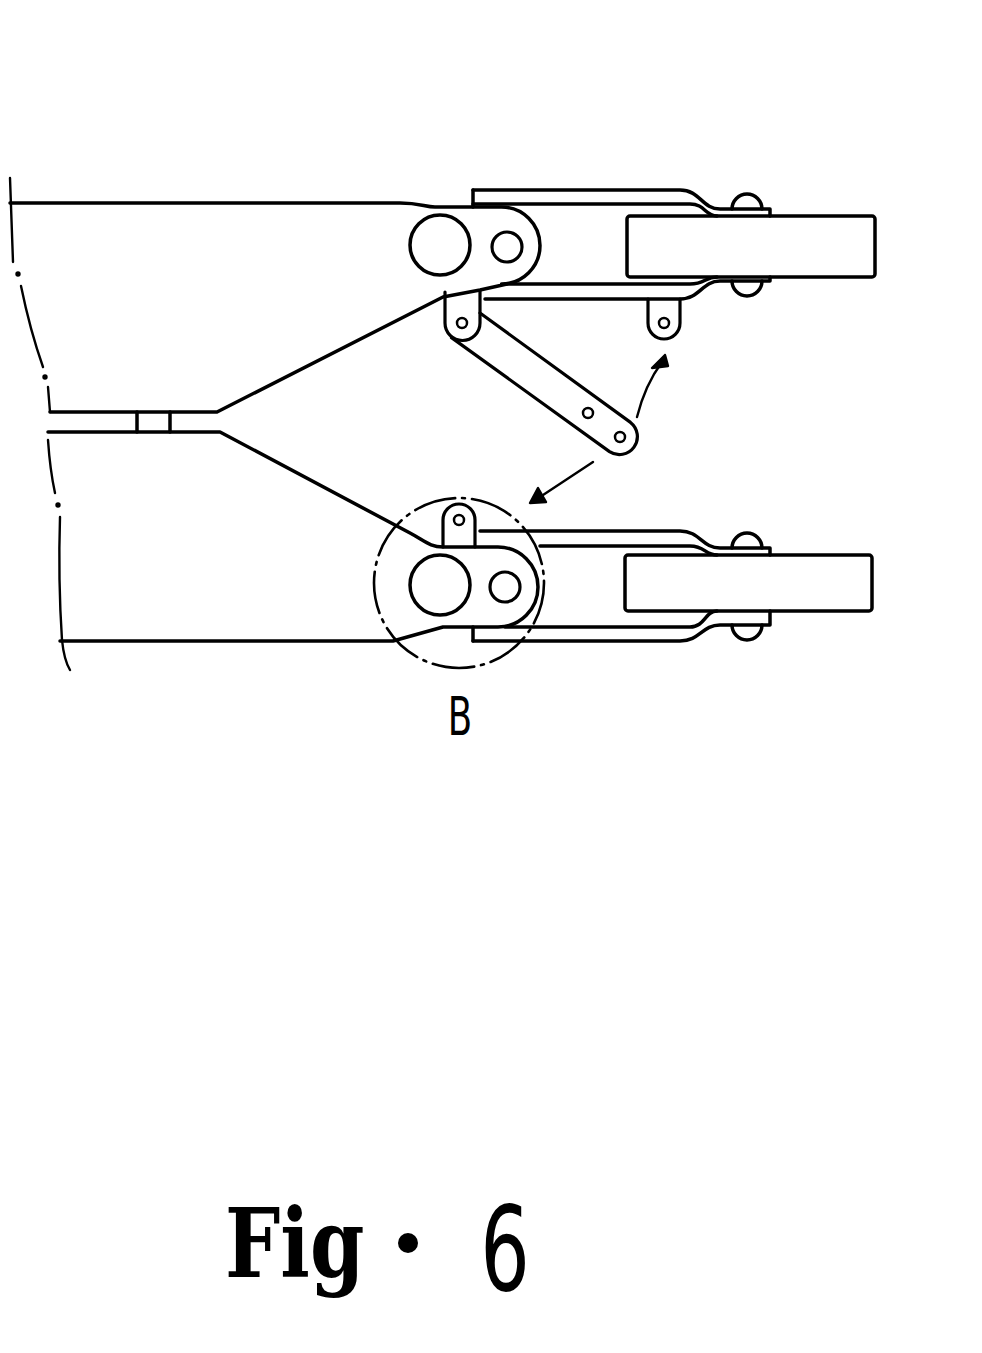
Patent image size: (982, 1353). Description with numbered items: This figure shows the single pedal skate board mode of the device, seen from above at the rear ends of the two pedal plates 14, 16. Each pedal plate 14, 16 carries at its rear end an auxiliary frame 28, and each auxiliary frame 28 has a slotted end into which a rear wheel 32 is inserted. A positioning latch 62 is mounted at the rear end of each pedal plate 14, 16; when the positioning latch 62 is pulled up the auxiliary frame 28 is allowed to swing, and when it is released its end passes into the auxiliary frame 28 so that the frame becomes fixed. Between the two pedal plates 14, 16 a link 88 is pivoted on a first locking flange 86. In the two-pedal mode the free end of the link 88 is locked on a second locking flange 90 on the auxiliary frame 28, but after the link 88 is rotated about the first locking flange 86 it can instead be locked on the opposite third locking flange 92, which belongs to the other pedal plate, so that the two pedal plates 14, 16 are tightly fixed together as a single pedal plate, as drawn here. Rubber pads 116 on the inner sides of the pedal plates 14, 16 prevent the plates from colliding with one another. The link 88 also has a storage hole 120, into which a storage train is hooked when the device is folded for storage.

The pedal plate 14 is at (183, 598).
The pedal plate 16 is at (77, 243).
The auxiliary frame 28 is at (582, 200).
The rear wheel 32 is at (805, 237).
The positioning latch 62 is at (436, 240).
The first locking flange 86 is at (443, 330).
The link 88 is at (517, 370).
The second locking flange 90 is at (680, 330).
The third locking flange 92 is at (440, 530).
The rubber pad 116 is at (158, 420).
The storage hole 120 is at (577, 427).